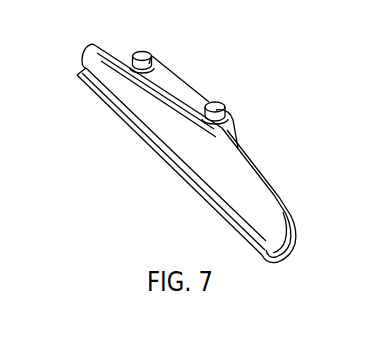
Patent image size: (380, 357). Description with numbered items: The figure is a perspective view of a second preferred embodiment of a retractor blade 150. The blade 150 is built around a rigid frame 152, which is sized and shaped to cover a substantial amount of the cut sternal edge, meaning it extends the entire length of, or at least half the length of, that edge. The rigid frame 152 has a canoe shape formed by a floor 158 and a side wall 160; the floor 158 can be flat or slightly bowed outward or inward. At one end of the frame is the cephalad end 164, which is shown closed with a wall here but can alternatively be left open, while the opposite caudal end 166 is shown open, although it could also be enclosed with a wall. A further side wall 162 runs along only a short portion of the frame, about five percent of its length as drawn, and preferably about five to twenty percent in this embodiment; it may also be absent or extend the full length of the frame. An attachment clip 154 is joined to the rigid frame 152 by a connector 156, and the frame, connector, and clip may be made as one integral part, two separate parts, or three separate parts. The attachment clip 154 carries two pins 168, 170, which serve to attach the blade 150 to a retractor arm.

The blade 150 is at (316, 148).
The rigid frame 152 is at (102, 62).
The attachment clip 154 is at (178, 80).
The connector 156 is at (238, 133).
The floor 158 is at (242, 182).
The side wall 160 is at (222, 222).
The side wall 162 is at (286, 199).
The cephalad end 164 is at (297, 232).
The caudal end 166 is at (81, 53).
The pin 168 is at (145, 50).
The pin 170 is at (218, 102).